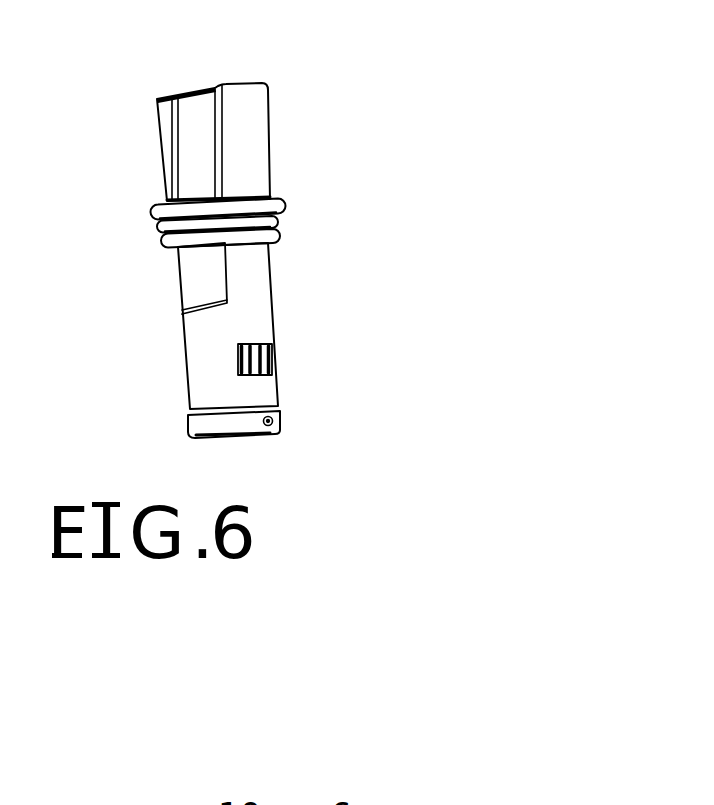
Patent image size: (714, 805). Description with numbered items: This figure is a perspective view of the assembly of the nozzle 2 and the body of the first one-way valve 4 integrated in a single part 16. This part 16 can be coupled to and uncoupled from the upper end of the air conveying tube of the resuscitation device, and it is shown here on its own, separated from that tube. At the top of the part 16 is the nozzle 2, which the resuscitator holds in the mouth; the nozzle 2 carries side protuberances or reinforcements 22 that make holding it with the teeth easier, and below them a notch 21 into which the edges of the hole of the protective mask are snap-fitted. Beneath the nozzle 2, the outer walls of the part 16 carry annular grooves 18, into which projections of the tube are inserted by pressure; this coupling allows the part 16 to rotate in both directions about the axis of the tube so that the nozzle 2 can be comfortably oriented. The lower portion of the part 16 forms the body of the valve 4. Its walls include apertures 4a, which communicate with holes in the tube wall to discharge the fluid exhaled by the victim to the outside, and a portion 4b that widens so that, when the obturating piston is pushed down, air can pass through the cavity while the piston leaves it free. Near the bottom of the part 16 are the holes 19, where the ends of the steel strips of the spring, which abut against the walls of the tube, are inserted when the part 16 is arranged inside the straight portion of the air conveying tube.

The nozzle 2 is at (157, 79).
The single part 16 is at (381, 156).
The side protuberances or reinforcements 22 is at (165, 160).
The notch 21 is at (276, 196).
The annular grooves 18 is at (168, 232).
The first one-way valve 4 is at (281, 275).
The apertures 4a is at (277, 341).
The widened portion 4b is at (212, 340).
The holes 19 is at (278, 422).